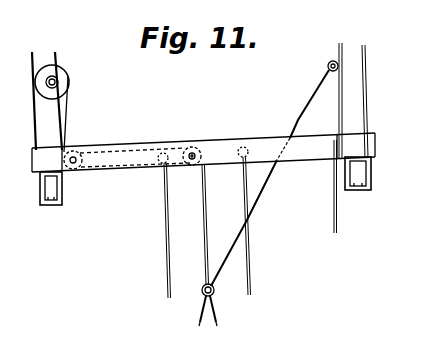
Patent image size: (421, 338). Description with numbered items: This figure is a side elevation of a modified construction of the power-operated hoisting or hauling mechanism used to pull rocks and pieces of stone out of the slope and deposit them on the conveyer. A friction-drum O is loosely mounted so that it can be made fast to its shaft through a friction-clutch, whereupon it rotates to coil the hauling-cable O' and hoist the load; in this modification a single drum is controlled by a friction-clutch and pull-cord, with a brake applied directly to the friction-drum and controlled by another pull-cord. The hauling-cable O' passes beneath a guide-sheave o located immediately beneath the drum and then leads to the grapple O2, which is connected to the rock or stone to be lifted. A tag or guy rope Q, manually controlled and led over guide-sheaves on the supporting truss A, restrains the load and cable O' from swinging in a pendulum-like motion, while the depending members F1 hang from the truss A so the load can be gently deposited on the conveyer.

The beam A is at (203, 160).
The friction-drum O is at (63, 108).
The guide-sheave o is at (77, 174).
The hauling-cable O' is at (191, 169).
The grapple O2 is at (215, 294).
The tag or guy rope Q is at (274, 173).
The hanging rods F1 is at (172, 244).